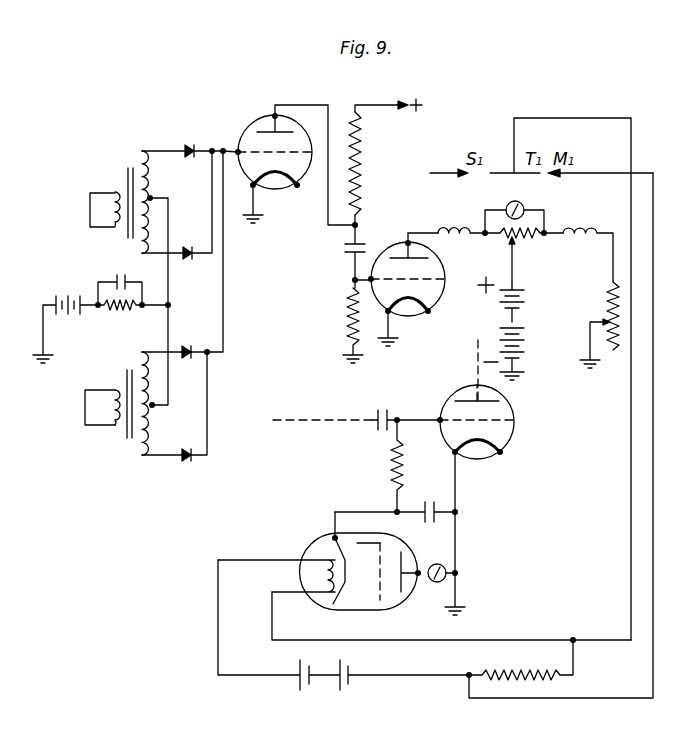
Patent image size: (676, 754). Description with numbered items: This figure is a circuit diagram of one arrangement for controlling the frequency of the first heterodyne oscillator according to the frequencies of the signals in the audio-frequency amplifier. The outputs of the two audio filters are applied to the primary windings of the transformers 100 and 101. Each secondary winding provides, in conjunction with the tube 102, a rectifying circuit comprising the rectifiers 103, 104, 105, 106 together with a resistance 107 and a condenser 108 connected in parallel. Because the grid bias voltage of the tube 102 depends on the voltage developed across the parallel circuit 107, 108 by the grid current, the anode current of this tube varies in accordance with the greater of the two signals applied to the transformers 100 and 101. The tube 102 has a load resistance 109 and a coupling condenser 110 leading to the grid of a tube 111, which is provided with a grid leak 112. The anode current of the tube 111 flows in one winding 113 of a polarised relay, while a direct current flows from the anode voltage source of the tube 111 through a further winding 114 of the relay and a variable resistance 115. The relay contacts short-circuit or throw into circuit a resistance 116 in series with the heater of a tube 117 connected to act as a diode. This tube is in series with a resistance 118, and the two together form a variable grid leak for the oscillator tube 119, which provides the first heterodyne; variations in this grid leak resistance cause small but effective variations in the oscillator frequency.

The transformer 100 is at (128, 170).
The transformer 101 is at (128, 378).
The tube 102 is at (250, 125).
The rectifier 103 is at (190, 147).
The rectifier 104 is at (187, 249).
The rectifier 105 is at (183, 348).
The rectifier 106 is at (186, 464).
The resistance 107 is at (131, 320).
The condenser 108 is at (123, 276).
The load resistance 109 is at (362, 172).
The coupling condenser 110 is at (359, 245).
The tube 111 is at (438, 301).
The grid leak 112 is at (346, 306).
The winding 113 is at (453, 238).
The further winding 114 is at (588, 237).
The variable resistance 115 is at (612, 312).
The resistance 116 is at (506, 673).
The tube 117 is at (340, 609).
The resistance 118 is at (391, 467).
The oscillator tube 119 is at (512, 434).